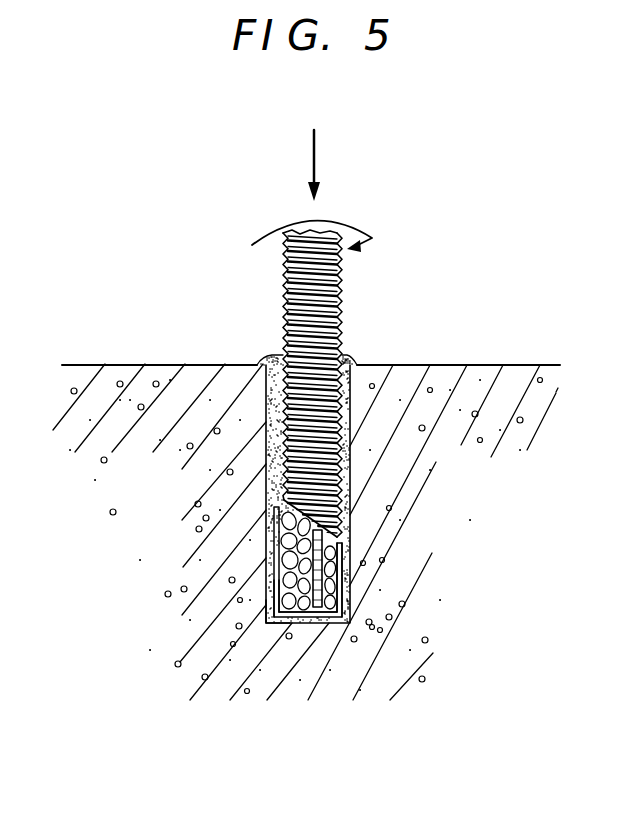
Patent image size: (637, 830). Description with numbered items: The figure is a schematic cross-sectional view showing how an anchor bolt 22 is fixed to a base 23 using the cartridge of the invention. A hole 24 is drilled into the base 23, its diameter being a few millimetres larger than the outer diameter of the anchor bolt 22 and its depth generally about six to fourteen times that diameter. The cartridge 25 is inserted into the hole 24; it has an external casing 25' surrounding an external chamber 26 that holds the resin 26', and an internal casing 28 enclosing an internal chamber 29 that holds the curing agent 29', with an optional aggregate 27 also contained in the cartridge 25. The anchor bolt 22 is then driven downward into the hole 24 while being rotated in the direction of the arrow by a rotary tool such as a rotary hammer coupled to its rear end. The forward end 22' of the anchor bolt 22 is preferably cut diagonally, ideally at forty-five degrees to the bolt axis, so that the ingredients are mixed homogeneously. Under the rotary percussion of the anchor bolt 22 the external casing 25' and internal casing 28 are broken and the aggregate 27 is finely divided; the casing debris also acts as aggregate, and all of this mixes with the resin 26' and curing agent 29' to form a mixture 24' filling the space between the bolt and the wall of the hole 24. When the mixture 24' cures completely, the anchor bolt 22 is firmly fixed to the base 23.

The anchor bolt 22 is at (274, 383).
The forward end 22' is at (209, 510).
The base 23 is at (277, 524).
The hole 24 is at (235, 562).
The mixture 24' is at (346, 466).
The cartridge 25 is at (377, 527).
The external casing 25' is at (236, 680).
The external chamber 26 is at (302, 683).
The resin 26' is at (206, 618).
The aggregate 27 is at (304, 616).
The internal casing 28 is at (346, 558).
The internal chamber 29 is at (412, 599).
The curing agent 29' is at (406, 540).